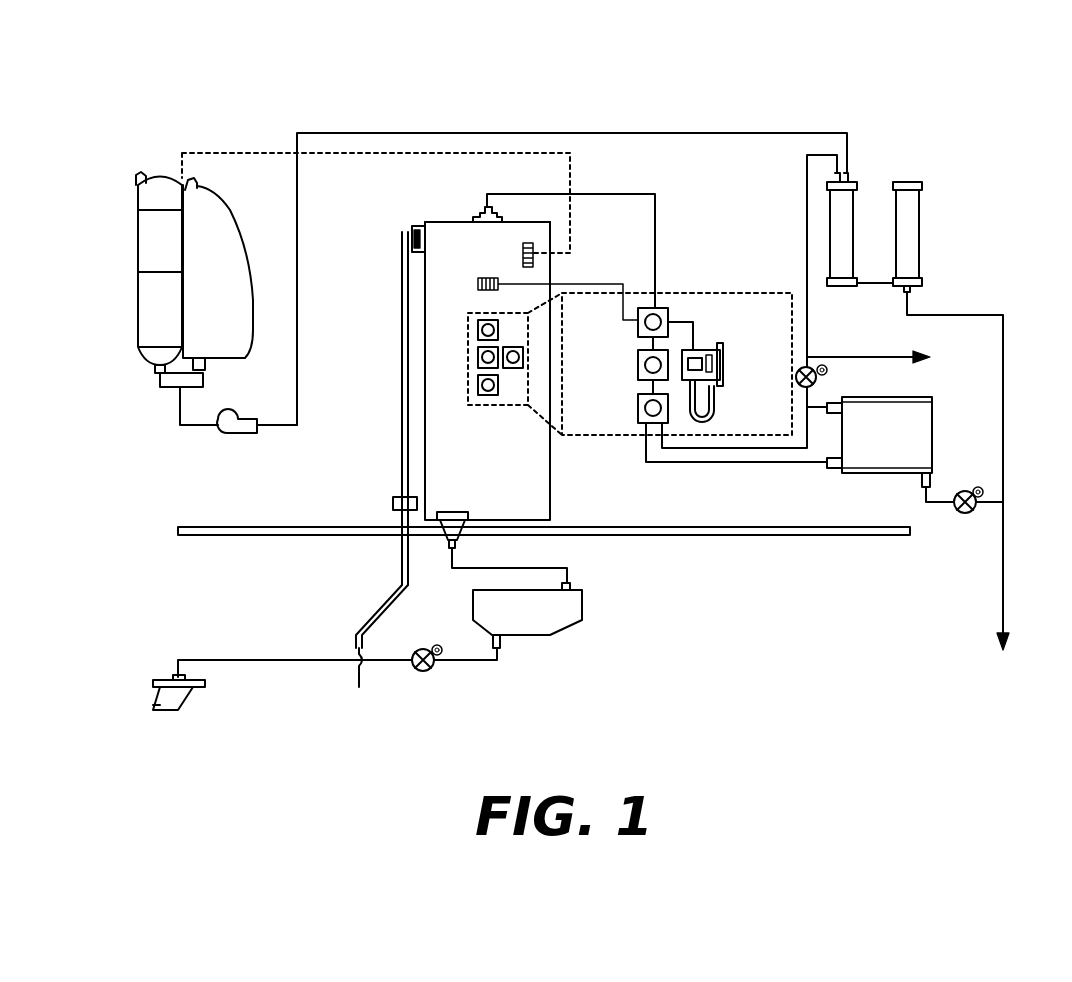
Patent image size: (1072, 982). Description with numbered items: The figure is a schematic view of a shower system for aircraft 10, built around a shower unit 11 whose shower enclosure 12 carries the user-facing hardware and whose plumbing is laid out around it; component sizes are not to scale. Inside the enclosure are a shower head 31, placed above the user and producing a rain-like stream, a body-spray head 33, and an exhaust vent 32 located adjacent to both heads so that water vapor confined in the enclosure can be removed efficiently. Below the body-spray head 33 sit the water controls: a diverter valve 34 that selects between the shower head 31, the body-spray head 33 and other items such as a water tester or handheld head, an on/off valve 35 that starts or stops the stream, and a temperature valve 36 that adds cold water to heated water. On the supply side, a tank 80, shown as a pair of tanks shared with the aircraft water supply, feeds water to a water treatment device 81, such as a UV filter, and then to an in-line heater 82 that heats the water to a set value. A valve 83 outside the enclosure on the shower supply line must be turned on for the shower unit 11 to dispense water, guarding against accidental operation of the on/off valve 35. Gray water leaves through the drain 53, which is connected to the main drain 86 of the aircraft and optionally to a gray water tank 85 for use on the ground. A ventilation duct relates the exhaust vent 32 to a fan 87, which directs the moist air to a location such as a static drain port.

The shower system for aircraft 10 is at (433, 90).
The shower unit 11 is at (445, 210).
The shower enclosure 12 is at (552, 478).
The shower head 31 is at (478, 214).
The exhaust vent 32 is at (416, 228).
The body-spray head 33 is at (478, 284).
The diverter valve 34 is at (476, 322).
The on/off valve 35 is at (476, 354).
The temperature valve 36 is at (476, 384).
The drain 53 is at (462, 512).
The tank 80 is at (138, 303).
The water treatment device 81 is at (905, 180).
The in-line heater 82 is at (928, 397).
The valve 83 is at (797, 385).
The gray water tank 85 is at (535, 638).
The main drain 86 is at (180, 712).
The fan 87 is at (393, 500).